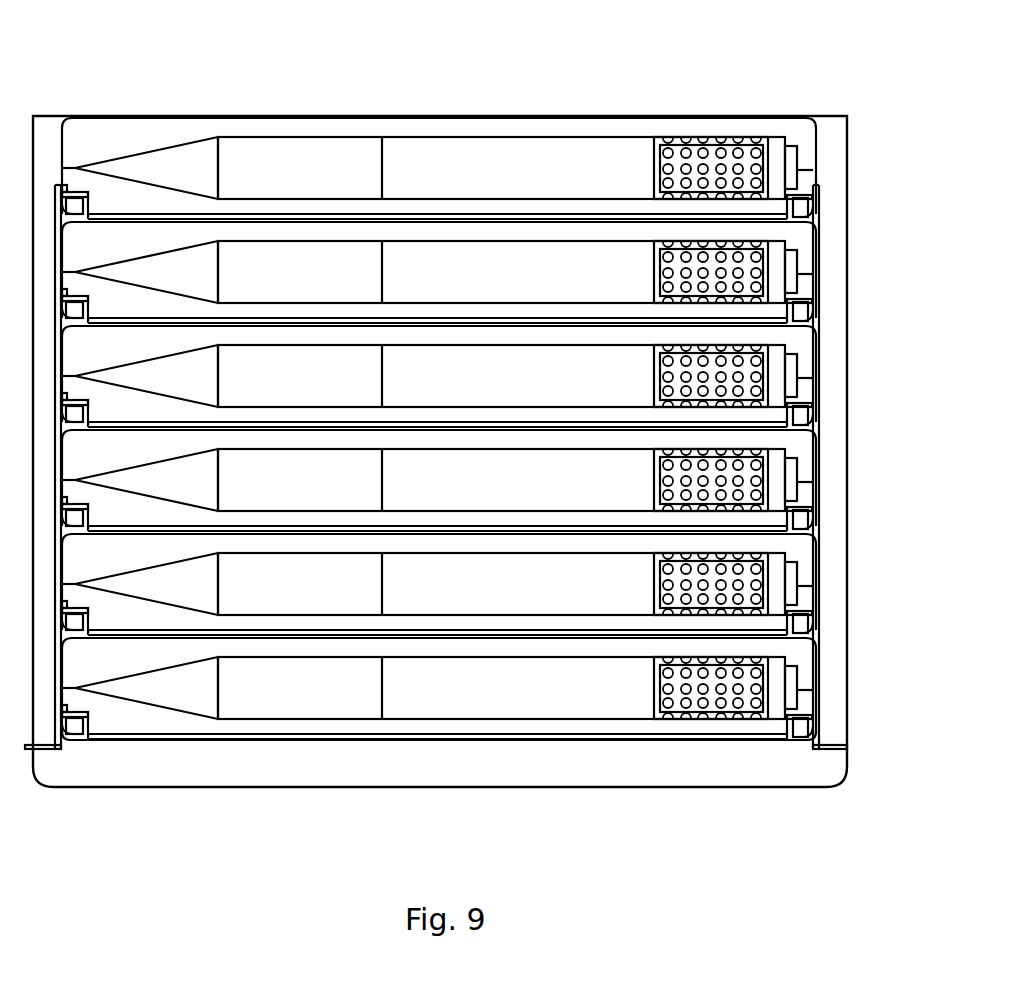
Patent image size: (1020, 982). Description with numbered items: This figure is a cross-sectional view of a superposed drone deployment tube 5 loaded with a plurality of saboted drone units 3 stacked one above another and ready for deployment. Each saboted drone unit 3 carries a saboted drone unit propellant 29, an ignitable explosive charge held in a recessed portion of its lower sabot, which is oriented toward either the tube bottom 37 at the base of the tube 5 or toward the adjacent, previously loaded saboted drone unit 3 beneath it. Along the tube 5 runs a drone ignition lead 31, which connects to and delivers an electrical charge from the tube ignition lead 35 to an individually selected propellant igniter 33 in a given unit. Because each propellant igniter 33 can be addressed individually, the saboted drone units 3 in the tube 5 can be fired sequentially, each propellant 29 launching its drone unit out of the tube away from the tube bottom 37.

The saboted drone unit 3 is at (513, 115).
The tube 5 is at (825, 142).
The saboted drone unit propellant 29 is at (819, 526).
The drone ignition lead 31 is at (819, 247).
The propellant igniter 33 is at (819, 405).
The tube ignition lead 35 is at (846, 748).
The tube bottom 37 is at (688, 760).